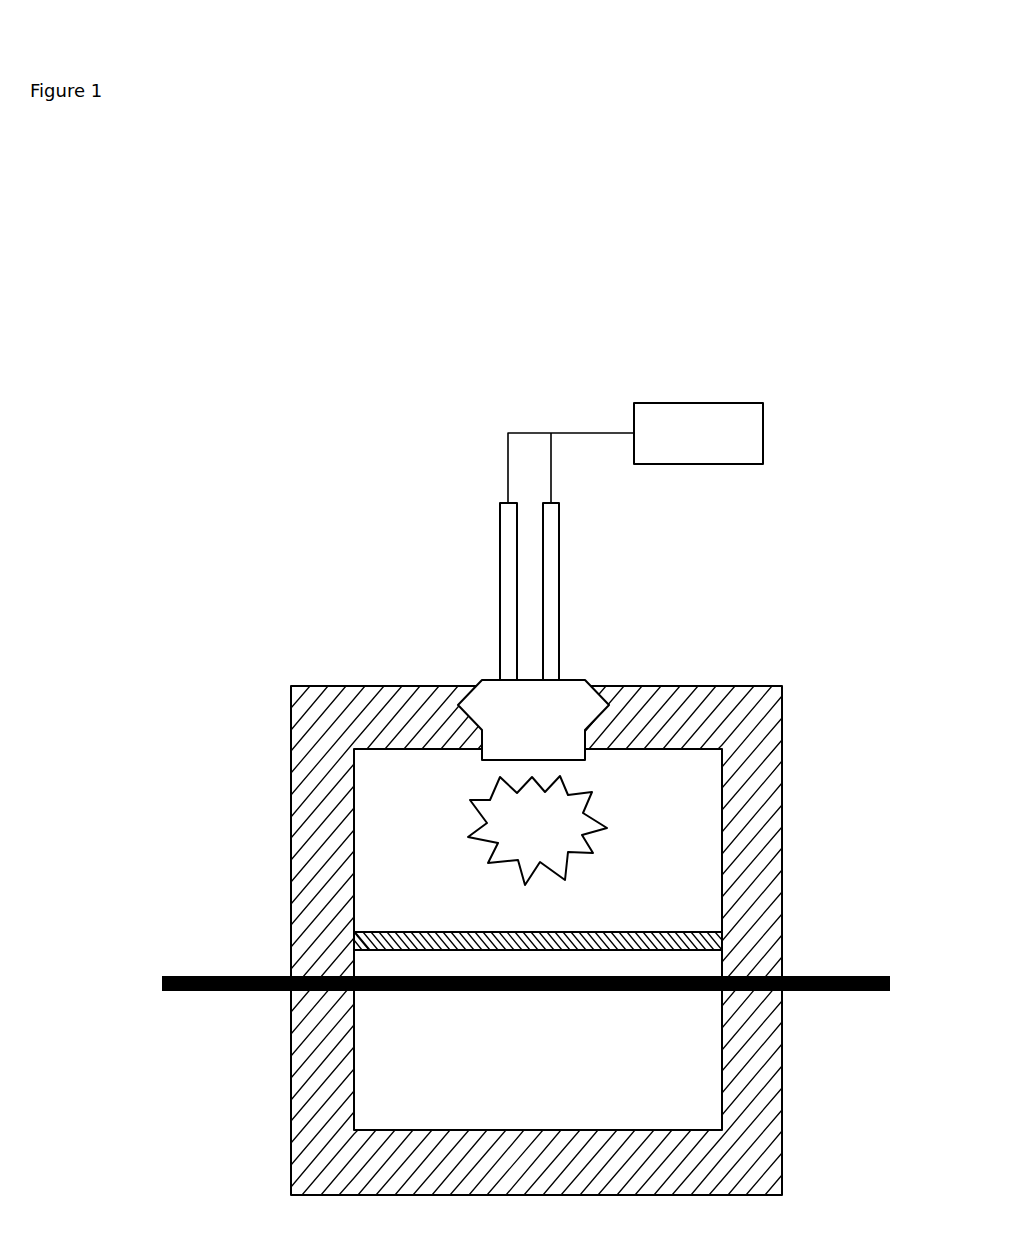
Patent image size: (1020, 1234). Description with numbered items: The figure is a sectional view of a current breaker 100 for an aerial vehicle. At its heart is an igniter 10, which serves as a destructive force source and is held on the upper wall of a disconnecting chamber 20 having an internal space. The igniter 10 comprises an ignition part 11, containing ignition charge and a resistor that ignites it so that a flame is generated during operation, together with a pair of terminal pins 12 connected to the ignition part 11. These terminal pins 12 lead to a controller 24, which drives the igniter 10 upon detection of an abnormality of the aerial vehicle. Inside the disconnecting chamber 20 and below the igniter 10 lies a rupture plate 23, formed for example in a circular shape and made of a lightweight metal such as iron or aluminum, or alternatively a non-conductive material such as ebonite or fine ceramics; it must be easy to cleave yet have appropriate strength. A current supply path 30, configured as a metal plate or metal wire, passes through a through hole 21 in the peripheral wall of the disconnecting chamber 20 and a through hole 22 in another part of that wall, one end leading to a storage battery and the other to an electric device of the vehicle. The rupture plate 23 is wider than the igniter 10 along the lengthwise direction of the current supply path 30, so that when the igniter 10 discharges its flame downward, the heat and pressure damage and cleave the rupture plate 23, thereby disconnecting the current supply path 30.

The current breaker 100 is at (560, 252).
The igniter 10 is at (525, 694).
The ignition part 11 is at (490, 692).
The terminal pin 12 is at (510, 537).
The disconnecting chamber 20 is at (320, 707).
The through hole 21 is at (310, 975).
The through hole 22 is at (755, 968).
The rupture plate 23 is at (410, 931).
The controller 24 is at (680, 403).
The current supply path 30 is at (193, 993).